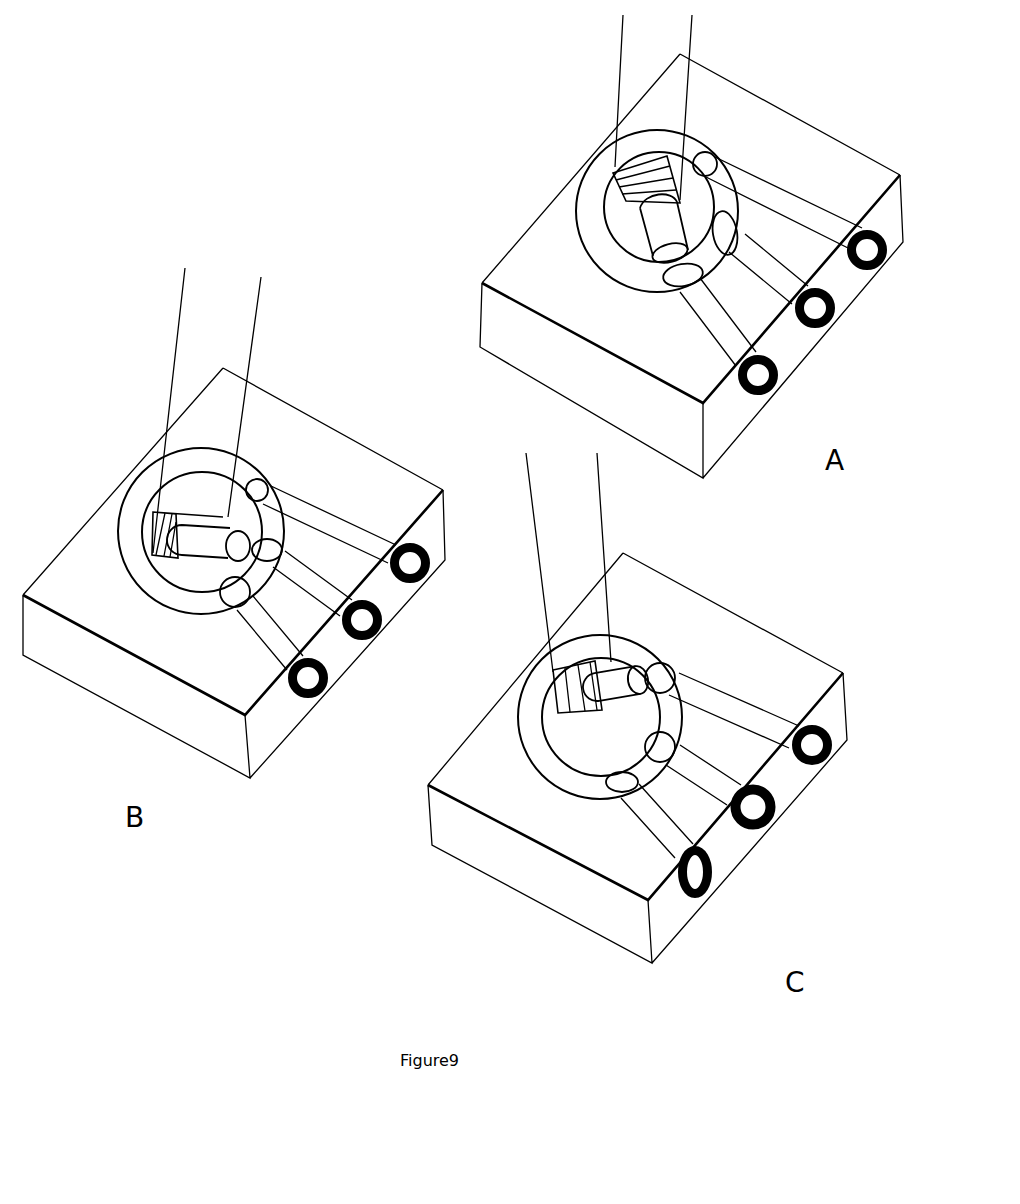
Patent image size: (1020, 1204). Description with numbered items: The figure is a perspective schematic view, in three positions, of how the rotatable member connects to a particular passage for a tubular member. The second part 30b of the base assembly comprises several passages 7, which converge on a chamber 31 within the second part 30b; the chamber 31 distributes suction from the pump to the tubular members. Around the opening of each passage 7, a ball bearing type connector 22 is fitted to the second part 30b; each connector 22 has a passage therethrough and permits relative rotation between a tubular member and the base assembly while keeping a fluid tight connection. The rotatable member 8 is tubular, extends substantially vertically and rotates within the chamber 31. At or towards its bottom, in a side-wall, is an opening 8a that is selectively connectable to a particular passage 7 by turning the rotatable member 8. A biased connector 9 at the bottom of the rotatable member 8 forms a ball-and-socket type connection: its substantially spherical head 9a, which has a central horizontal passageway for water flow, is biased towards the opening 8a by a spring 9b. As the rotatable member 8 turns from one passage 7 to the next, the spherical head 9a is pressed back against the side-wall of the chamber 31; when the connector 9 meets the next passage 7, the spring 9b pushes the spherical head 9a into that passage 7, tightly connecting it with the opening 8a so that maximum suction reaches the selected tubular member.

The passages 7 is at (812, 220).
The rotatable member 8 is at (645, 40).
The opening 8a is at (680, 205).
The biased connector 9 is at (640, 218).
The spherical head 9a is at (665, 262).
The spring 9b is at (635, 192).
The ball bearing type connector 22 is at (877, 273).
The second part of the base assembly 30b is at (610, 382).
The chamber 31 is at (603, 193).